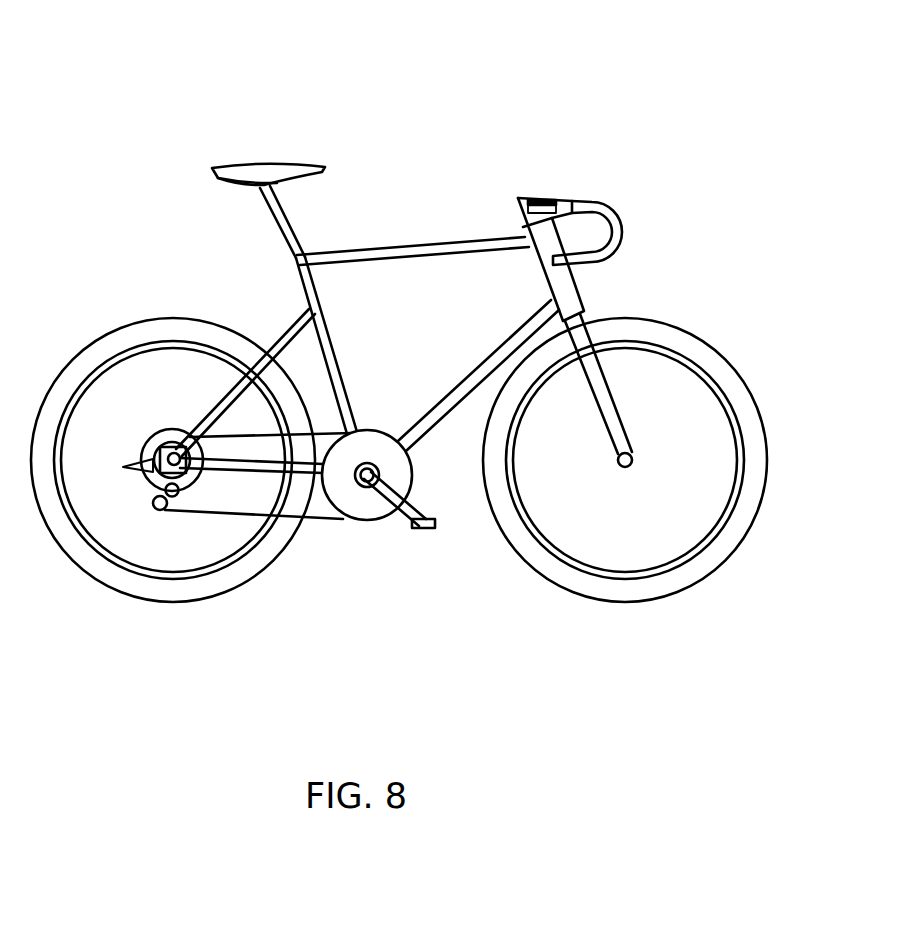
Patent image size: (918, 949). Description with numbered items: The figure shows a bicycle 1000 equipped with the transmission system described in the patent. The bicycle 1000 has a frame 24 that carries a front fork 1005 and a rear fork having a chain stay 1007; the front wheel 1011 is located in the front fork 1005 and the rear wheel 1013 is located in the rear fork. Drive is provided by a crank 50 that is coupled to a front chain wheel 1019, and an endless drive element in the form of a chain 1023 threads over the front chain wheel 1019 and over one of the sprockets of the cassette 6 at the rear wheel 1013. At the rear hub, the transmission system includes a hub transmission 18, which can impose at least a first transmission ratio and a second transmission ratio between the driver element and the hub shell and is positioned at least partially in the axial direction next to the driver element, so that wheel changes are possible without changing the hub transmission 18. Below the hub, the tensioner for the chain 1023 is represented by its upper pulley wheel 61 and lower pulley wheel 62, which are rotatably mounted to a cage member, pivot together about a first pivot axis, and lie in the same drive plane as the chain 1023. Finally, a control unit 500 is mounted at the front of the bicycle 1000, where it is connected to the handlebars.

The bicycle 1000 is at (113, 100).
The frame 24 is at (407, 245).
The control unit 500 is at (541, 201).
The front fork 1005 is at (619, 428).
The cassette 6 is at (157, 437).
The hub transmission 18 is at (148, 470).
The upper pulley wheel 61 is at (165, 489).
The lower pulley wheel 62 is at (157, 507).
The chain 1023 is at (322, 522).
The front chain wheel 1019 is at (363, 508).
The crank 50 is at (418, 530).
The chain stay 1007 is at (247, 465).
The rear wheel 1013 is at (118, 566).
The front wheel 1011 is at (663, 577).